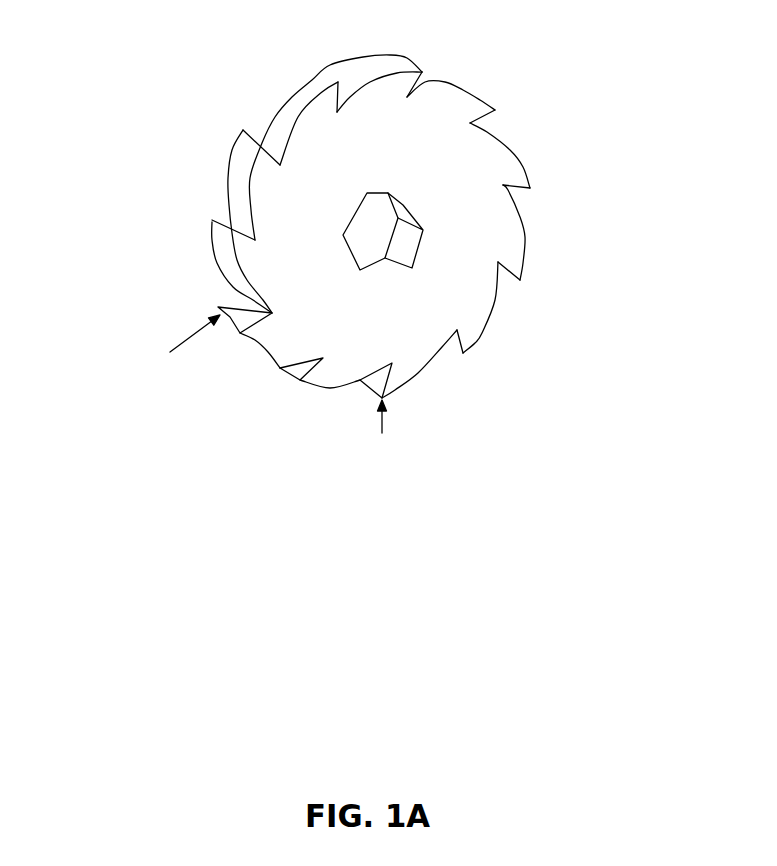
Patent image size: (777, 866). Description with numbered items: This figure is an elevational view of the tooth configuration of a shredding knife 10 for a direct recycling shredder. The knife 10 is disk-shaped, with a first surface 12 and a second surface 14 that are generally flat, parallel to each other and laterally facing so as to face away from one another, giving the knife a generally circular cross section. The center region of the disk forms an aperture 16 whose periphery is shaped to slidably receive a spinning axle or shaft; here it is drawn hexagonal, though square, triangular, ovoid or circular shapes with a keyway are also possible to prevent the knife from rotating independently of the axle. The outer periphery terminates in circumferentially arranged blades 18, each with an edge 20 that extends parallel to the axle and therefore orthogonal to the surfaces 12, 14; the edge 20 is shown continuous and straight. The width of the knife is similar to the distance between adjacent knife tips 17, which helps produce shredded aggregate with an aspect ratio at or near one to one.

The shredding knife configuration 10 is at (561, 151).
The first surface 12 is at (313, 306).
The second surface 14 is at (460, 104).
The aperture 16 is at (385, 228).
The knife tips 17 is at (302, 70).
The blades 18 is at (297, 383).
The edge 20 is at (211, 230).